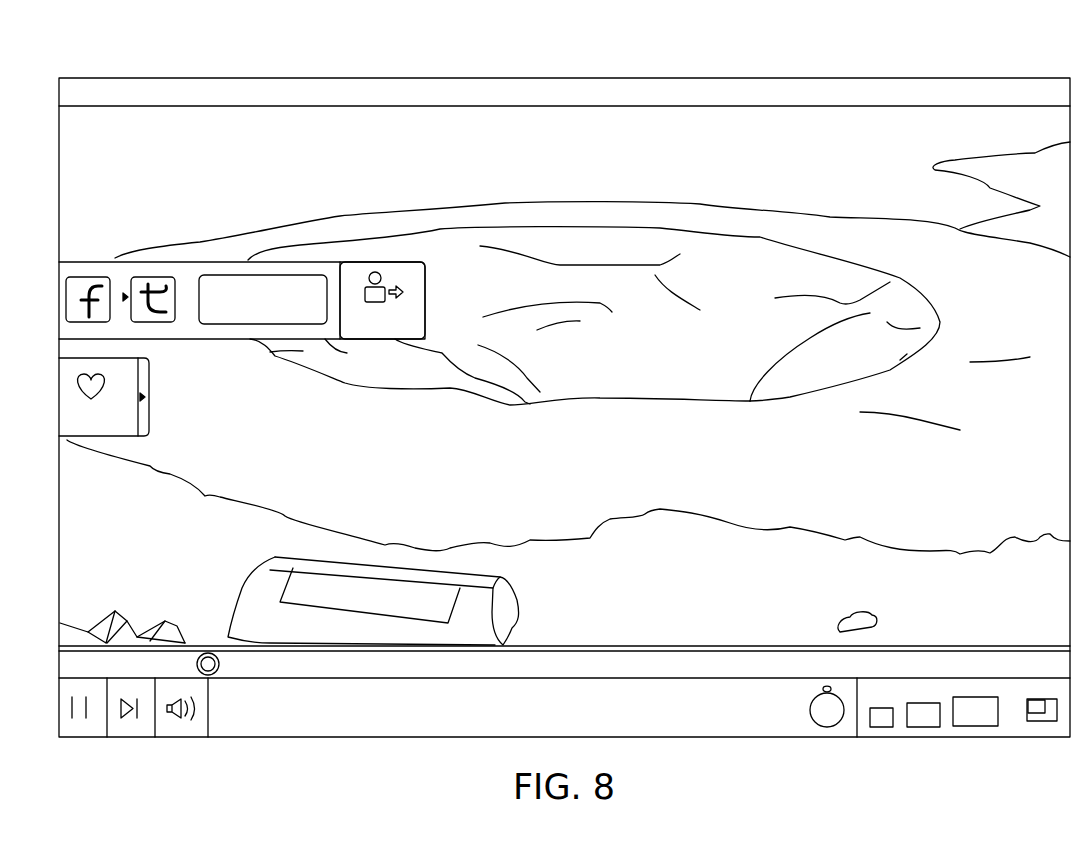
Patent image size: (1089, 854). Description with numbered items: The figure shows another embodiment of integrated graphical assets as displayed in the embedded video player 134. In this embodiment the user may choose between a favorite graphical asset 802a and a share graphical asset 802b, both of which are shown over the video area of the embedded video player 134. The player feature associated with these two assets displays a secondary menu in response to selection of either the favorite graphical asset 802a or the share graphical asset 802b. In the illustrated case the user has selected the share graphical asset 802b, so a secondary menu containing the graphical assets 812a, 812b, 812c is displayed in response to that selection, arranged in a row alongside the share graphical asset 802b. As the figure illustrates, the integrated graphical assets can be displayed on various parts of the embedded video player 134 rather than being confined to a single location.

The embedded video player 134 is at (71, 48).
The graphical asset 812a is at (88, 275).
The graphical asset 812b is at (157, 275).
The graphical asset 812c is at (257, 278).
The share graphical asset 802b is at (407, 272).
The favorite graphical asset 802a is at (150, 389).